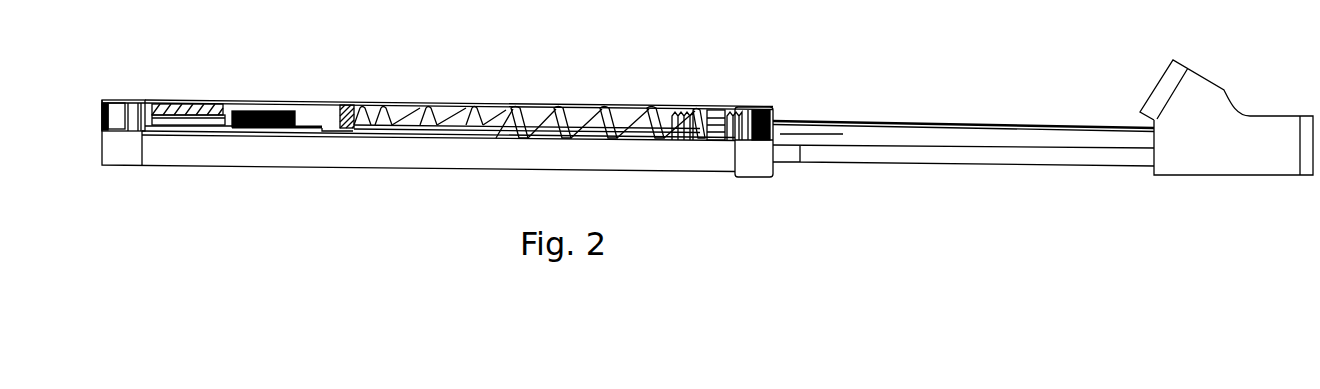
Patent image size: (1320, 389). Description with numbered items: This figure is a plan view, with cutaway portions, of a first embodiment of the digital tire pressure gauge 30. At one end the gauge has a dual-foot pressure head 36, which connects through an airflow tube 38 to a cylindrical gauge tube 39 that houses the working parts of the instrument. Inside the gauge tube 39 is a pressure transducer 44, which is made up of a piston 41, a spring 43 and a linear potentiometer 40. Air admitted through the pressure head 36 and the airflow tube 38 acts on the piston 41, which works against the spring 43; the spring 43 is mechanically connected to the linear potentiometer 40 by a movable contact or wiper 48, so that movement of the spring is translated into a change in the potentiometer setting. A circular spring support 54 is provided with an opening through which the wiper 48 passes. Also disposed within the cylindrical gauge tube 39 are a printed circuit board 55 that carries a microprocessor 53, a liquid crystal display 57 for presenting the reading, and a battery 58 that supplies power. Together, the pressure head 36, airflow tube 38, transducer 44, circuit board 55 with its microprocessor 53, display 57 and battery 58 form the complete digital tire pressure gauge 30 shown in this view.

The digital tire pressure gauge 30 is at (833, 37).
The dual-foot pressure head 36 is at (1227, 90).
The airflow tube 38 is at (1028, 150).
The cylindrical gauge tube 39 is at (582, 155).
The linear potentiometer 40 is at (448, 118).
The piston 41 is at (720, 112).
The spring 43 is at (613, 132).
The pressure transducer 44 is at (605, 100).
The wiper 48 is at (487, 138).
The microprocessor 53 is at (253, 110).
The circular spring support 54 is at (347, 102).
The printed circuit board 55 is at (317, 128).
The liquid crystal display 57 is at (167, 98).
The battery 58 is at (113, 117).